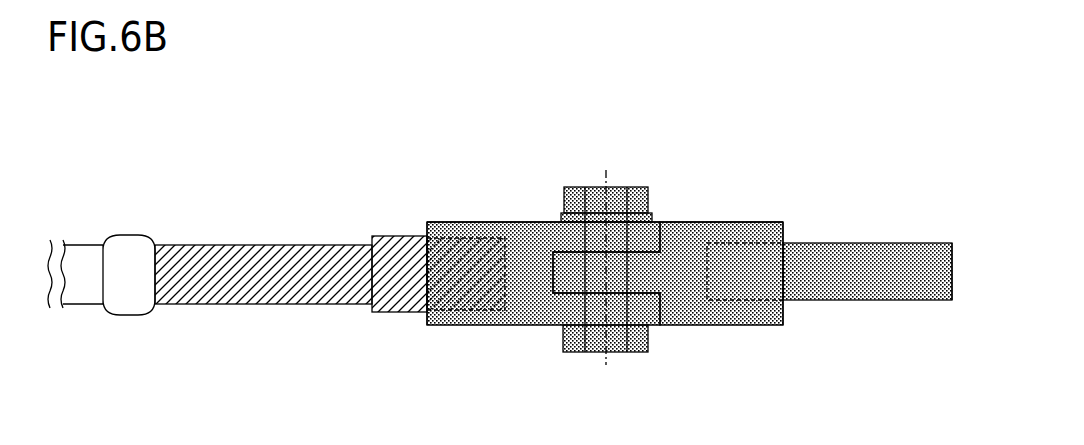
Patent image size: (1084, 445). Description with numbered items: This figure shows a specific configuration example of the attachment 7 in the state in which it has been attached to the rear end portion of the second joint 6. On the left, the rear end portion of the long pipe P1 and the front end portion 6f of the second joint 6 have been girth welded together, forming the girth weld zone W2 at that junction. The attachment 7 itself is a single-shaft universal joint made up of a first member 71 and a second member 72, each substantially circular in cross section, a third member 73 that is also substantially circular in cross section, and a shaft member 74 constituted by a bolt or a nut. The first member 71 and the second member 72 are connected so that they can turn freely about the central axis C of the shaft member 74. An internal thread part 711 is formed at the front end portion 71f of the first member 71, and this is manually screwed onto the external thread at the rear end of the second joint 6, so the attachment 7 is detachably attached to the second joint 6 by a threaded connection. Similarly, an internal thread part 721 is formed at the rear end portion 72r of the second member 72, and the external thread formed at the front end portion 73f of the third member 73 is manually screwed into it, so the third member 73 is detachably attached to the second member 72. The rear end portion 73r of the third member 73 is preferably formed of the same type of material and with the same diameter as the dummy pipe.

The long pipe P1 is at (80, 297).
The girth weld zone W2 is at (132, 250).
The second joint 6 is at (300, 255).
The front end portion of second joint 6f is at (453, 232).
The attachment 7 is at (513, 120).
The first member 71 is at (528, 235).
The internal thread part 711 is at (473, 228).
The front end portion of first member 71f is at (428, 225).
The second member 72 is at (698, 235).
The internal thread part 721 is at (745, 235).
The rear end portion of second member 72r is at (781, 232).
The third member 73 is at (836, 255).
The front end portion of third member 73f is at (710, 232).
The rear end portion of third member 73r is at (940, 250).
The shaft member 74 is at (640, 200).
The central axis C is at (607, 256).